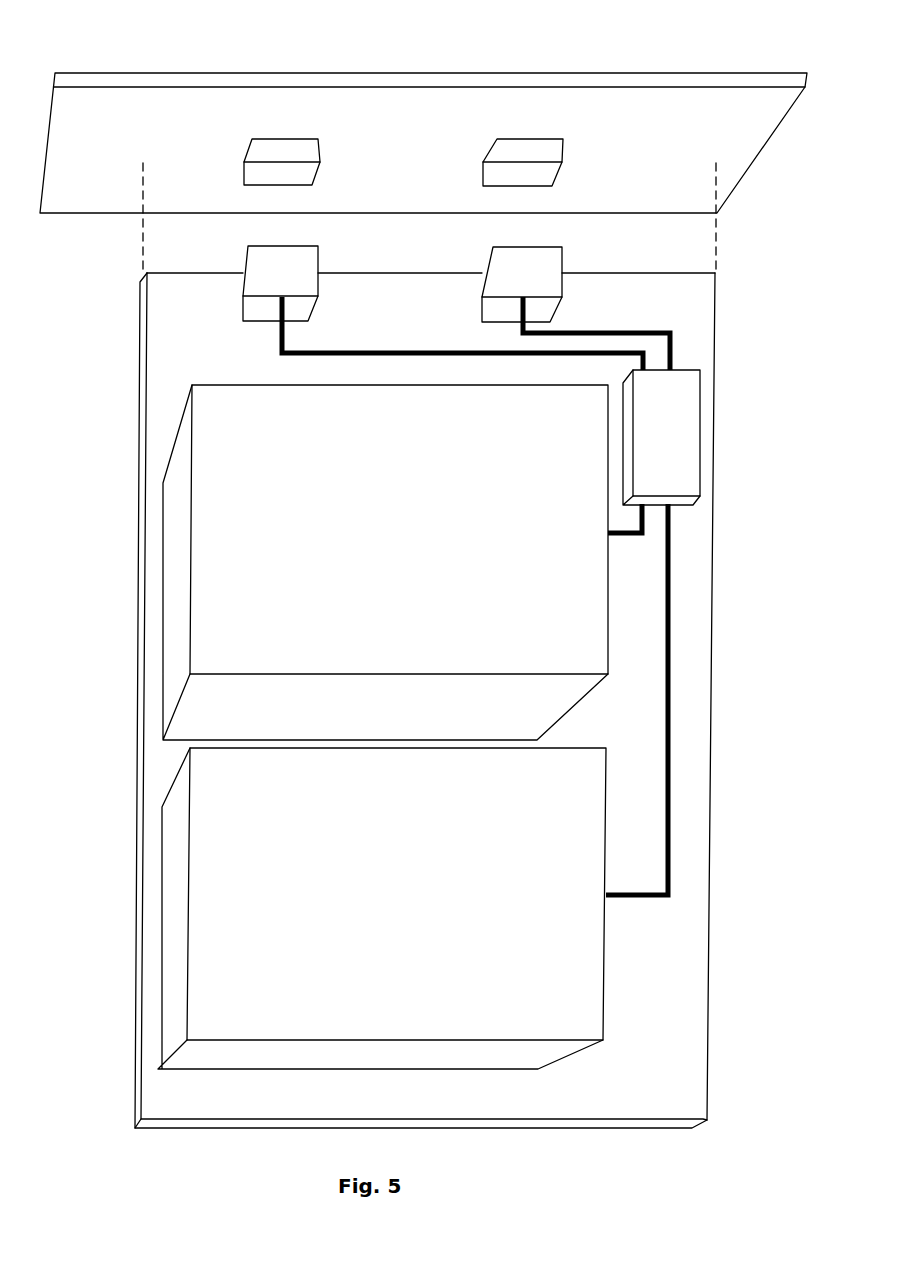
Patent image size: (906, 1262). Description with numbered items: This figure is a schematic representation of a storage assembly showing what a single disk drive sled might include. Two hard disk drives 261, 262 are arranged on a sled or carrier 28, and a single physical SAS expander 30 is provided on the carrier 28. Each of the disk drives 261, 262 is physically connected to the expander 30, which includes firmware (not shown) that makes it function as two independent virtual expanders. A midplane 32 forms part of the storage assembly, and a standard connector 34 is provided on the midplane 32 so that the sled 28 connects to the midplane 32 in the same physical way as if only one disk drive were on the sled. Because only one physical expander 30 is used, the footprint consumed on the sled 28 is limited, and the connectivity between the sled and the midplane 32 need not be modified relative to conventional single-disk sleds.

The sled or carrier 28 is at (663, 972).
The SAS expander 30 is at (668, 415).
The midplane 32 is at (645, 117).
The standard connector 34 is at (275, 152).
The hard disk drive 261 is at (217, 516).
The hard disk drive 262 is at (215, 887).